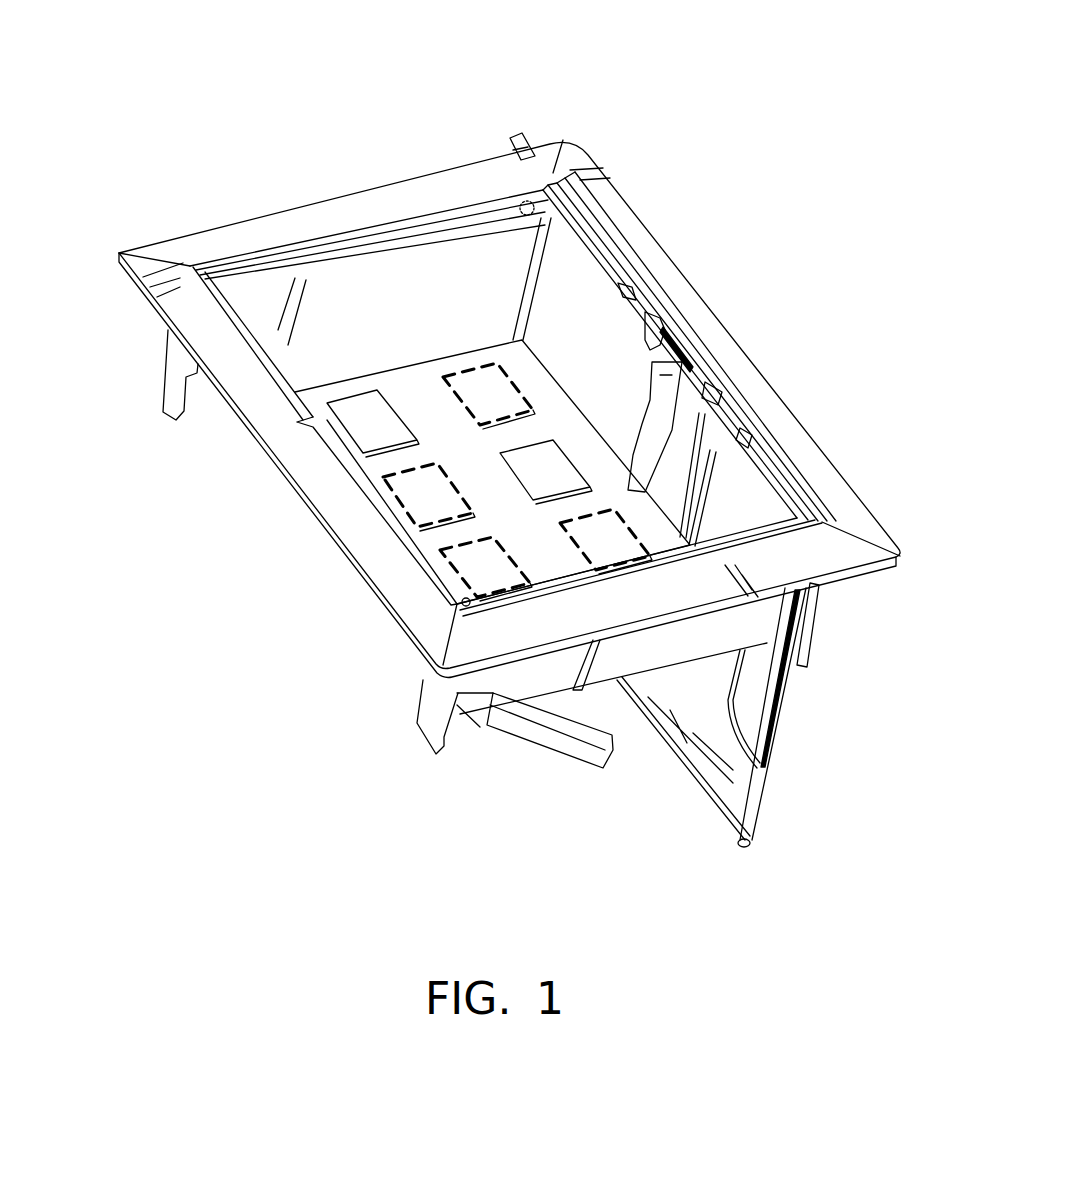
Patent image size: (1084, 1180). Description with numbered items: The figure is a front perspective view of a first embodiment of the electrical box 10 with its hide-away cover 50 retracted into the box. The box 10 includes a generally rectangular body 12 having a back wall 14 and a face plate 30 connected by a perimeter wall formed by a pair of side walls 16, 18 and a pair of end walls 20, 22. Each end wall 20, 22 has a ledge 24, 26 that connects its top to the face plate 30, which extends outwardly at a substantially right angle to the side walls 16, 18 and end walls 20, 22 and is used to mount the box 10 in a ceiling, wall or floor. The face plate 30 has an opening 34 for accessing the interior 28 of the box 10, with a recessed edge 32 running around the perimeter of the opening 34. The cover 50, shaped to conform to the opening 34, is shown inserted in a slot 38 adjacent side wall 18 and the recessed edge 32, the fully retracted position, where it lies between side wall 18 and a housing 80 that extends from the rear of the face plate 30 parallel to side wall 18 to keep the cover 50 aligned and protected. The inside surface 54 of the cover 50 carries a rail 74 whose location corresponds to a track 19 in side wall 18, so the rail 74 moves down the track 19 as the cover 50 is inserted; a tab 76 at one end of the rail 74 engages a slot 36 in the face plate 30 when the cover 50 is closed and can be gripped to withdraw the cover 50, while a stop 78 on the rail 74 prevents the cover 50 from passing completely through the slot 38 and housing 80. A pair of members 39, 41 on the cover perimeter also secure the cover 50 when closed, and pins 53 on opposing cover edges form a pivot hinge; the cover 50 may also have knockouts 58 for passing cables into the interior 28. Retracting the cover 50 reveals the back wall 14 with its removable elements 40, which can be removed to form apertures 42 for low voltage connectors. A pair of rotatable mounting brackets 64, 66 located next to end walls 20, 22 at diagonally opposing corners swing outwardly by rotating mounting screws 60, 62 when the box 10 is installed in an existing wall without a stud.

The electrical box 10 is at (378, 88).
The body 12 is at (116, 314).
The back wall 14 is at (413, 405).
The side wall 16 is at (313, 527).
The side wall 18 is at (593, 347).
The track 19 is at (667, 423).
The end wall 20 is at (330, 300).
The end wall 22 is at (593, 670).
The ledge 24 is at (267, 270).
The ledge 26 is at (822, 524).
The interior 28 is at (326, 352).
The face plate 30 is at (637, 240).
The recessed edge 32 is at (593, 220).
The opening 34 is at (363, 300).
The slot 36 is at (247, 405).
The slot 38 is at (803, 512).
The member 39 is at (620, 288).
The removable elements 40 is at (517, 482).
The member 41 is at (713, 390).
The apertures 42 is at (459, 447).
The cover 50 is at (792, 768).
The pins 53 is at (750, 843).
The inside surface 54 is at (686, 703).
The knockouts 58 is at (753, 690).
The mounting screw 60 is at (533, 205).
The mounting screw 62 is at (447, 607).
The mounting bracket 64 is at (500, 733).
The mounting bracket 66 is at (517, 137).
The rail 74 is at (677, 427).
The tab 76 is at (647, 310).
The stop 78 is at (667, 487).
The housing 80 is at (817, 630).